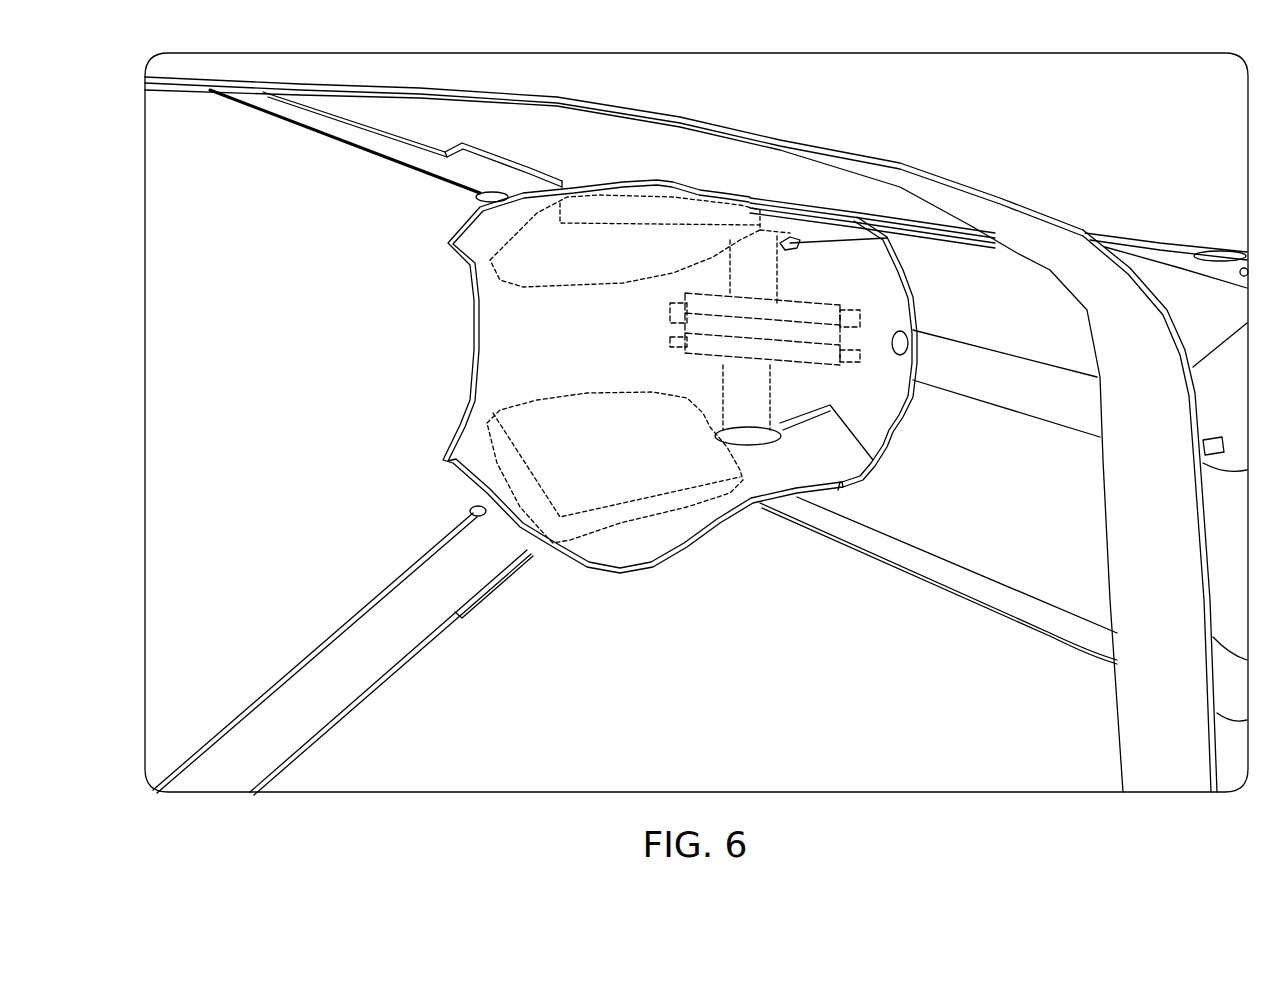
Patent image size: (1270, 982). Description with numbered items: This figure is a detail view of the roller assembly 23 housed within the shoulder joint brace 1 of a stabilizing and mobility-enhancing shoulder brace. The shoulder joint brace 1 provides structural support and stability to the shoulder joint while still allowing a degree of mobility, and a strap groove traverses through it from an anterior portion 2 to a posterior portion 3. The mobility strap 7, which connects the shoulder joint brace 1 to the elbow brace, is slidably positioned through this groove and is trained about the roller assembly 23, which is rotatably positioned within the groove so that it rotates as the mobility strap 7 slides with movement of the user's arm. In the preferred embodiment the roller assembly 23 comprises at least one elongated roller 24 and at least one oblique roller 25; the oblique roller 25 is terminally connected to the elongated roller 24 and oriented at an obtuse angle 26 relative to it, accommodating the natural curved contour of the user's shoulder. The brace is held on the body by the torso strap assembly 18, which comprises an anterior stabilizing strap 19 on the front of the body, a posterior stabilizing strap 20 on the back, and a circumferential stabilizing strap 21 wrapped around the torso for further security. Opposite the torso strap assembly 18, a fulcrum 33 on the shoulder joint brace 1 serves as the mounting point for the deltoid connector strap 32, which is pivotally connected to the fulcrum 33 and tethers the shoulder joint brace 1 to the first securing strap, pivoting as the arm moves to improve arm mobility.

The shoulder joint brace 1 is at (458, 418).
The anterior portion 2 is at (653, 176).
The posterior portion 3 is at (714, 550).
The mobility strap 7 is at (713, 424).
The torso strap assembly 18 is at (822, 142).
The anterior stabilizing strap 19 is at (320, 668).
The posterior stabilizing strap 20 is at (358, 135).
The circumferential stabilizing strap 21 is at (1018, 218).
The roller assembly 23 is at (664, 311).
The elongated roller 24 is at (687, 347).
The oblique roller 25 is at (823, 353).
The obtuse angle 26 is at (795, 248).
The deltoid connector strap 32 is at (1000, 367).
The fulcrum 33 is at (917, 340).